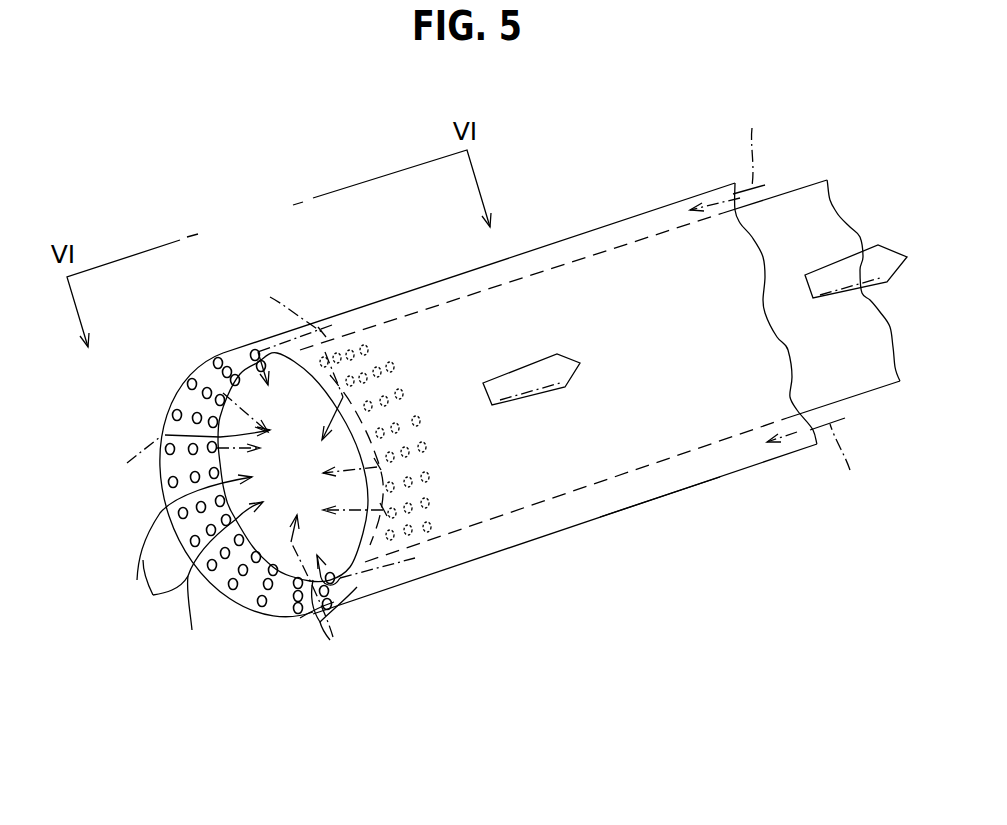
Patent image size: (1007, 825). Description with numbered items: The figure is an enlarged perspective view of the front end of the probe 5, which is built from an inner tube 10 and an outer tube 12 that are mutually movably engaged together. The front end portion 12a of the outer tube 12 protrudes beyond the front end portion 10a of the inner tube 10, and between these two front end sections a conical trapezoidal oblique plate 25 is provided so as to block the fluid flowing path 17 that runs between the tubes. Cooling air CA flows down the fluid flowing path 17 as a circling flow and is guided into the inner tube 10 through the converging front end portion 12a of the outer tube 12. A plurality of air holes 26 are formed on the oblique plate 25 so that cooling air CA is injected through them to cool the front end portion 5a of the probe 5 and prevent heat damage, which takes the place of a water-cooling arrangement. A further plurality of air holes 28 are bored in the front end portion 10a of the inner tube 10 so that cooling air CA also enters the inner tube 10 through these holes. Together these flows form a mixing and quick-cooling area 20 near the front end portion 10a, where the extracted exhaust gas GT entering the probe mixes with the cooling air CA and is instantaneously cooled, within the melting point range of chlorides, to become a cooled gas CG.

The probe 5 is at (532, 233).
The front end portion of the probe 5a is at (165, 419).
The inner tube 10 is at (800, 190).
The front end portion of the inner tube 10a is at (265, 562).
The outer tube 12 is at (605, 222).
The front end portion of the outer tube 12a is at (176, 392).
The fluid flowing path 17 is at (650, 482).
The mixing and quick-cooling area 20 is at (286, 430).
The conical trapezoidal oblique plate 25 is at (197, 369).
The air holes 26 is at (167, 484).
The air holes 28 is at (414, 540).
The cooling air CA is at (480, 390).
The cooled gas CG is at (507, 405).
The extracted exhaust gas GT is at (153, 595).